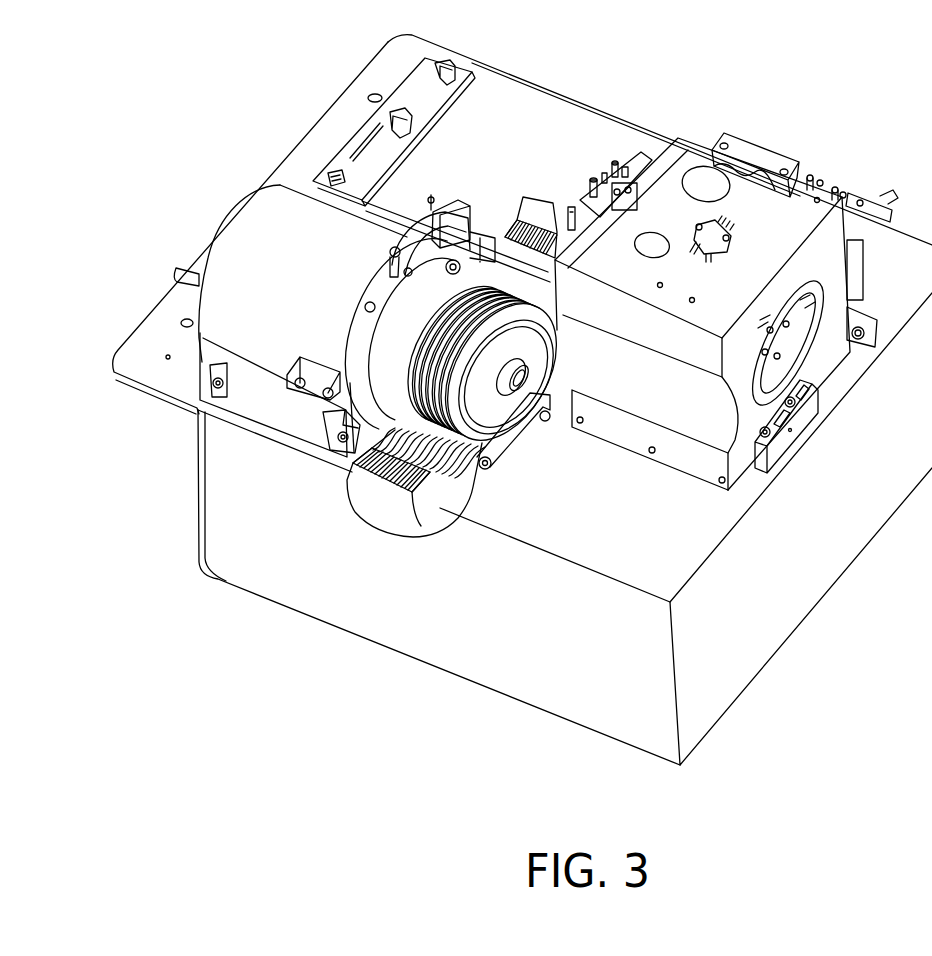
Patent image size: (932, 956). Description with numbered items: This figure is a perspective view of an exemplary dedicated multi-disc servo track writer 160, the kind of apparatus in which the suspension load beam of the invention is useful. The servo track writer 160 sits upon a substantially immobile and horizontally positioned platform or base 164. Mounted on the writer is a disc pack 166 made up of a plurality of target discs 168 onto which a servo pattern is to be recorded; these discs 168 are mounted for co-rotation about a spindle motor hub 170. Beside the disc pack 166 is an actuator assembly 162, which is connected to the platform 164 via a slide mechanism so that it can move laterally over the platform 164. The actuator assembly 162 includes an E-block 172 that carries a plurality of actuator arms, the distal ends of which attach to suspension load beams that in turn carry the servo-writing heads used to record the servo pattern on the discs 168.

The multi-disc servo track writer 160 is at (795, 117).
The actuator assembly 162 is at (577, 172).
The platform 164 is at (410, 625).
The disc pack 166 is at (533, 339).
The target discs 168 is at (488, 364).
The spindle motor hub 170 is at (522, 392).
The E-block 172 is at (550, 232).